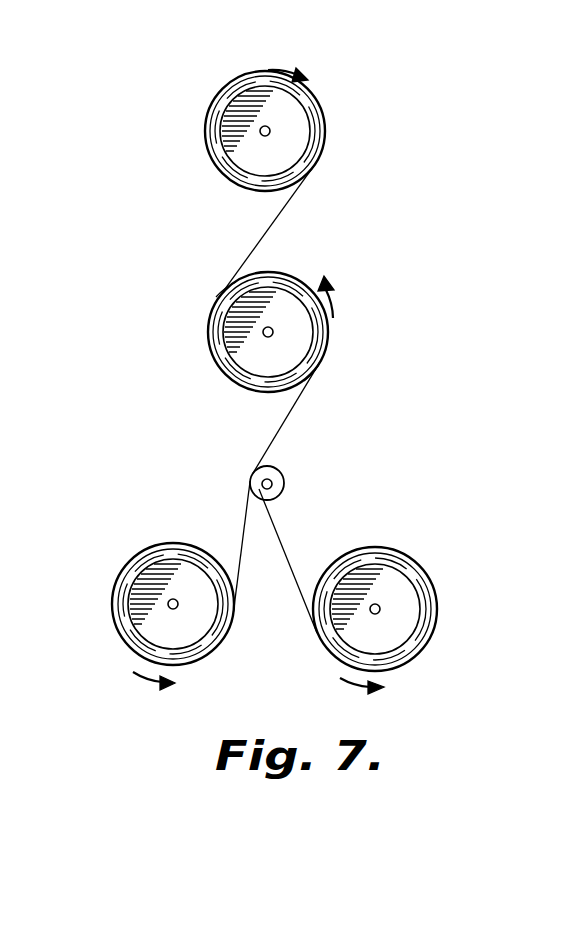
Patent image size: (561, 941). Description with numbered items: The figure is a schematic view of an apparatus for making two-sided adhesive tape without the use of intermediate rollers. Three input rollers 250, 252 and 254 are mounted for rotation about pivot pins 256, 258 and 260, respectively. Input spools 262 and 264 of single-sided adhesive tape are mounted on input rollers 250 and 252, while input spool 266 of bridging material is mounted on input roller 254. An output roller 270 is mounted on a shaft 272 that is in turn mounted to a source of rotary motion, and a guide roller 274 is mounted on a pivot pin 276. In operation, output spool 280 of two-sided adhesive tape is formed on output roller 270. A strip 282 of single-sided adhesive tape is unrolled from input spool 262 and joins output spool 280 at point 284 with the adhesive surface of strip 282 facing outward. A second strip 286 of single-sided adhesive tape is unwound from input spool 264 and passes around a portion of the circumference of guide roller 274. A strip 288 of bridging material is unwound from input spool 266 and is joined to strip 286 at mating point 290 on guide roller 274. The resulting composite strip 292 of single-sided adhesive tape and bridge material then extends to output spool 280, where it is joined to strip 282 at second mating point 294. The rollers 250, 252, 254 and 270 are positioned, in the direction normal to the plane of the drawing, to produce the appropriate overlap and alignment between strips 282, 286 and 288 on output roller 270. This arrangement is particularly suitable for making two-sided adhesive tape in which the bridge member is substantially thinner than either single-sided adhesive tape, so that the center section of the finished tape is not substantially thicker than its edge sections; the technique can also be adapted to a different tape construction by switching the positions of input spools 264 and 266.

The input roller 250 is at (232, 115).
The pivot pin 256 is at (261, 134).
The input spool 262 is at (318, 128).
The output roller 270 is at (236, 318).
The shaft 272 is at (266, 337).
The output spool 280 is at (277, 276).
The strip of single-sided adhesive tape 282 is at (260, 240).
The point 284 is at (226, 292).
The composite strip 292 is at (294, 405).
The second mating point 294 is at (312, 372).
The mating point 290 is at (274, 477).
The guide roller 274 is at (283, 475).
The pivot pin 276 is at (273, 486).
The input roller 254 is at (147, 590).
The pivot pin 260 is at (169, 607).
The input spool 266 is at (158, 556).
The strip of bridging material 288 is at (239, 575).
The input roller 252 is at (385, 580).
The pivot pin 258 is at (378, 613).
The input spool 264 is at (429, 615).
The strip of single-sided adhesive tape 286 is at (283, 543).